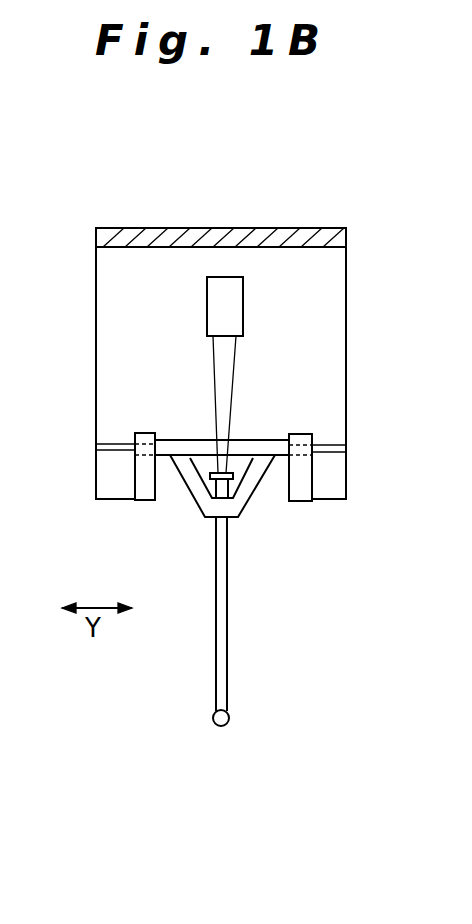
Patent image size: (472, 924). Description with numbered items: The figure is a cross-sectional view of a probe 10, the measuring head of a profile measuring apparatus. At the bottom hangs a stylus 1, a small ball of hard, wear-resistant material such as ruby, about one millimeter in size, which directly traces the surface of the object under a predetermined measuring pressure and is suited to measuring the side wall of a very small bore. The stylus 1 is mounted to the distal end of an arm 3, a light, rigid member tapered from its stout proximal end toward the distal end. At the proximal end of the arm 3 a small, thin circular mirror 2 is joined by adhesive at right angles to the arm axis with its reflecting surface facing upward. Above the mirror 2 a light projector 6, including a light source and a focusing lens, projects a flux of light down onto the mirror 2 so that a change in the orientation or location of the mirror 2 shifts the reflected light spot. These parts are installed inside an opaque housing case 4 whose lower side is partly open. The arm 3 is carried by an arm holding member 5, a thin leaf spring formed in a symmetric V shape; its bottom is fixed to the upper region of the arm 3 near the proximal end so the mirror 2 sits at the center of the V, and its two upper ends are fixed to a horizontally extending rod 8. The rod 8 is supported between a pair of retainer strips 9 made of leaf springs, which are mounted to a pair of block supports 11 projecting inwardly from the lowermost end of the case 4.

The stylus 1 is at (230, 718).
The mirror 2 is at (208, 471).
The arm 3 is at (227, 605).
The housing case 4 is at (243, 229).
The arm holding member 5 is at (245, 488).
The light projector 6 is at (217, 276).
The rod 8 is at (175, 443).
The retainer strips 9 is at (145, 478).
The probe 10 is at (291, 226).
The block supports 11 is at (113, 486).